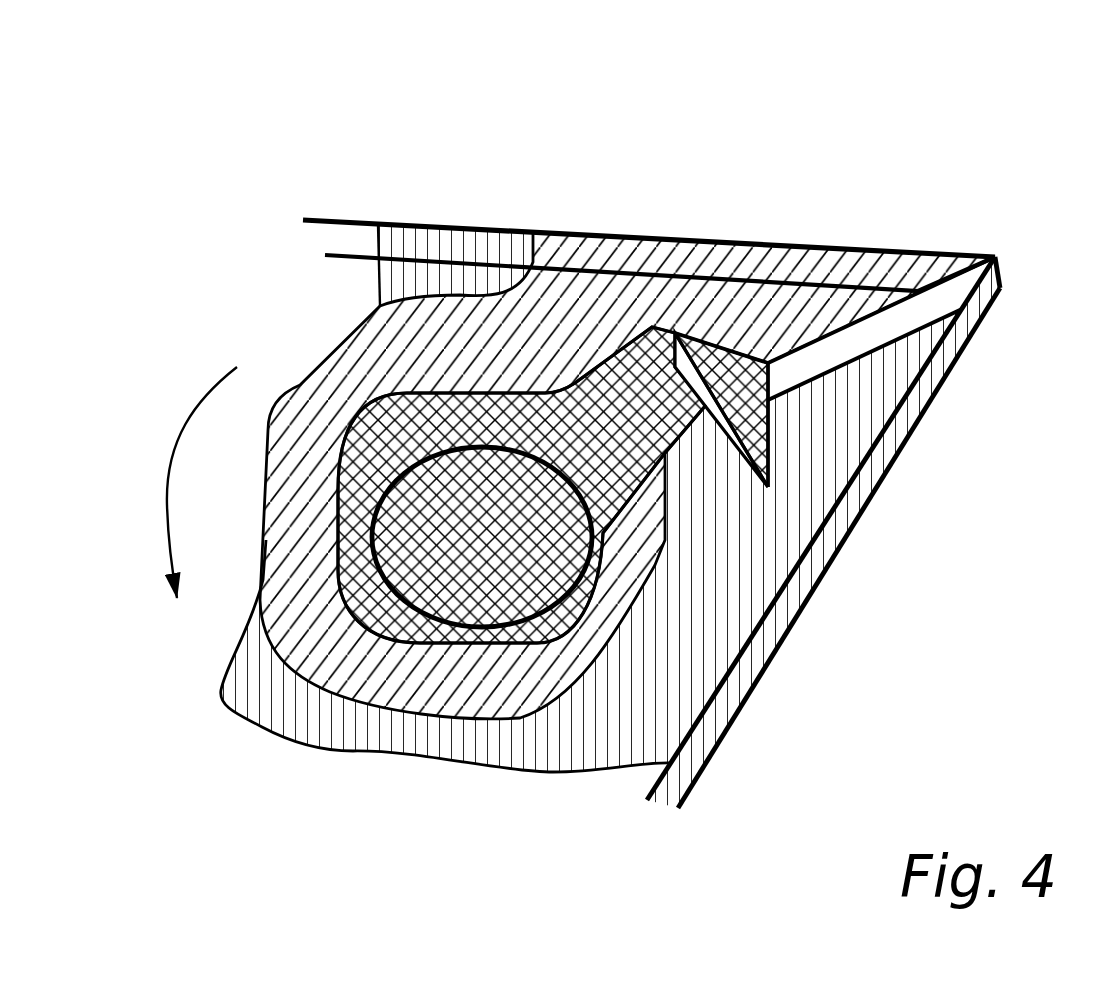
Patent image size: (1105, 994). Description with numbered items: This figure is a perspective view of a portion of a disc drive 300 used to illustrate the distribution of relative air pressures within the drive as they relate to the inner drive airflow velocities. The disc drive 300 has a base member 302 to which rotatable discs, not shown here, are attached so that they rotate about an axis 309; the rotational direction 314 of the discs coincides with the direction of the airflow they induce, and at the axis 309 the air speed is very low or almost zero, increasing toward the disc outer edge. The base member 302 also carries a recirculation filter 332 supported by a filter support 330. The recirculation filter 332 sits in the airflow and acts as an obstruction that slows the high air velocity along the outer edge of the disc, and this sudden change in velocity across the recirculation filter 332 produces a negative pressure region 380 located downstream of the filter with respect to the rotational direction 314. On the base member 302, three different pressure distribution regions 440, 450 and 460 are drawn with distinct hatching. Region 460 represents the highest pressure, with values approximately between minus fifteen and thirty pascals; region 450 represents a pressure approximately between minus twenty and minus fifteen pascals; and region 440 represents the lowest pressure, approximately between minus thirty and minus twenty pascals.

The disc drive 300 is at (553, 126).
The base member 302 is at (774, 652).
The axis 309 is at (443, 543).
The rotational direction 314 is at (183, 418).
The filter support 330 is at (748, 410).
The recirculation filter 332 is at (886, 331).
The negative pressure region 380 is at (763, 303).
The pressure distribution region 440 is at (640, 378).
The pressure distribution region 450 is at (445, 370).
The pressure distribution region 460 is at (742, 550).